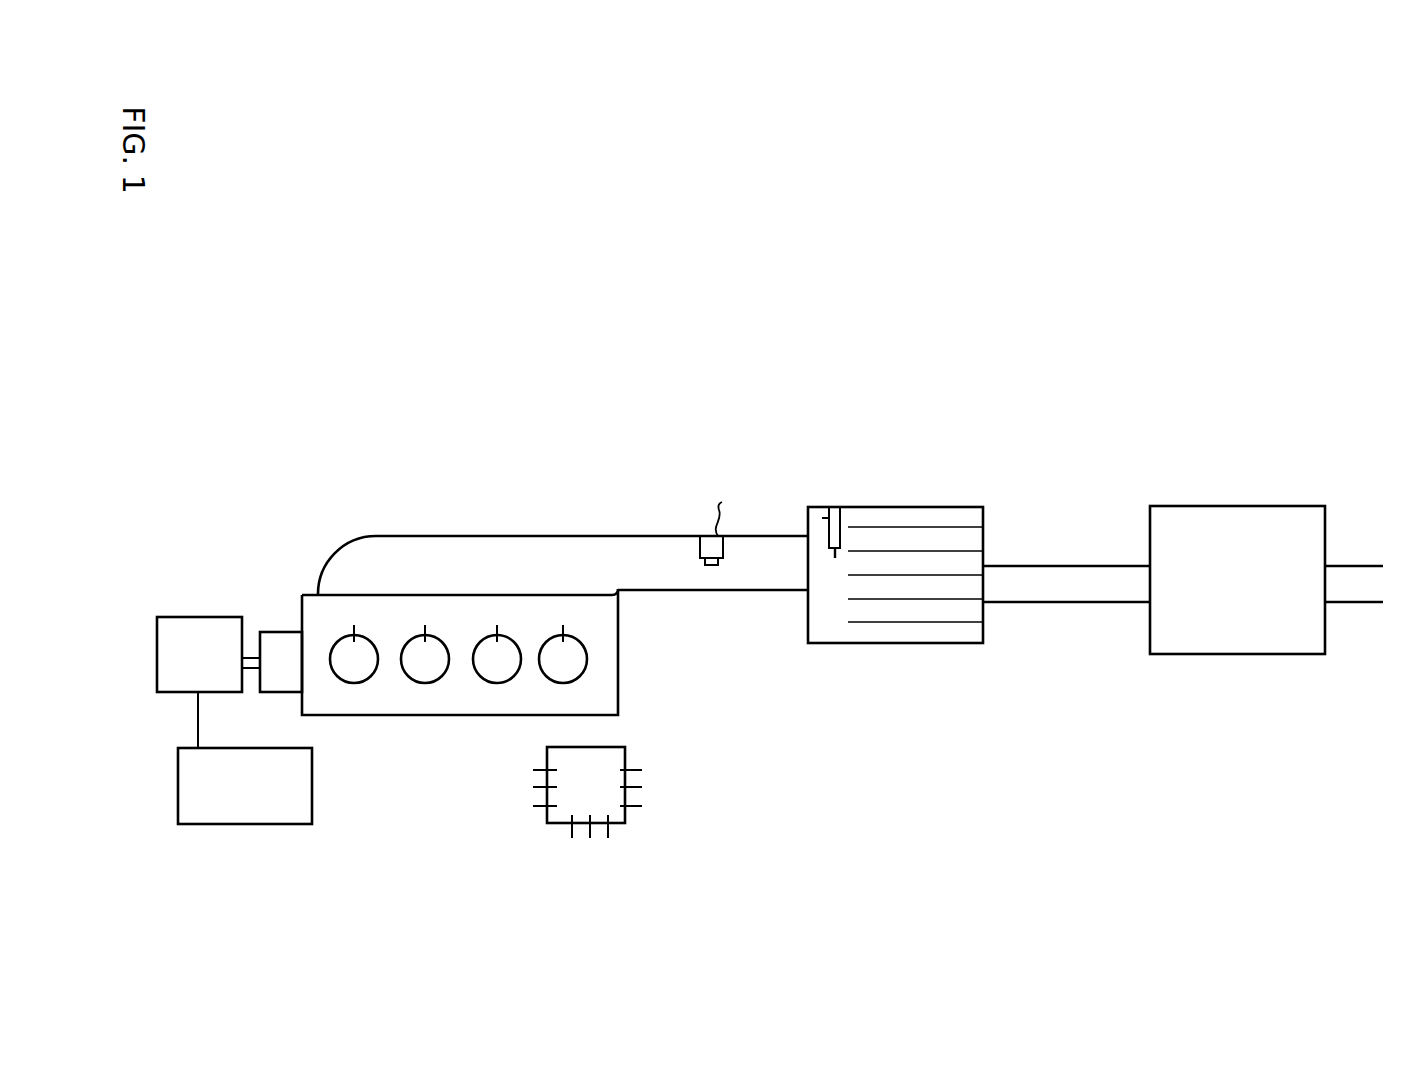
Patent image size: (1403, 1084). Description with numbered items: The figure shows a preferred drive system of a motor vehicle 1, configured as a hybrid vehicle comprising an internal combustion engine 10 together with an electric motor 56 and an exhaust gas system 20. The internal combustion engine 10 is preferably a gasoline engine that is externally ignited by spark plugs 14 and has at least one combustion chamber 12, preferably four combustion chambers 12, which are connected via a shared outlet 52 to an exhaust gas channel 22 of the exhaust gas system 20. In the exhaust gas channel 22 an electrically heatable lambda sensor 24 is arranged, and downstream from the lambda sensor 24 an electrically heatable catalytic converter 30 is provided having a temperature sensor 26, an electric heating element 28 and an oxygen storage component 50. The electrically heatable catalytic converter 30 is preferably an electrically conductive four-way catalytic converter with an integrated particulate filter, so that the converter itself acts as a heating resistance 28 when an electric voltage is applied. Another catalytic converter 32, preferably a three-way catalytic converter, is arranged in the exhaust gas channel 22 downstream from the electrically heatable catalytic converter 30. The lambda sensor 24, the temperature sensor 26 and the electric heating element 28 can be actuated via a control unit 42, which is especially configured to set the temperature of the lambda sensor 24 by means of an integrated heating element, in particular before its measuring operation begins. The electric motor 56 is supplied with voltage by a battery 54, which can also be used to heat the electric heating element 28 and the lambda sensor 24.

The motor vehicle 1 is at (1068, 423).
The internal combustion engine 10 is at (618, 700).
The combustion chamber 12 is at (418, 668).
The spark plugs 14 is at (563, 625).
The exhaust gas system 20 is at (678, 490).
The exhaust gas channel 22 is at (1060, 592).
The electrically heatable lambda sensor 24 is at (713, 576).
The temperature sensor 26 is at (835, 507).
The electric heating element 28 is at (836, 536).
The electrically heatable catalytic converter 30 is at (968, 507).
The catalytic converter 32 is at (1192, 506).
The control unit 42 is at (613, 809).
The oxygen storage component 50 is at (913, 622).
The shared outlet 52 is at (539, 548).
The battery 54 is at (242, 810).
The electric motor 56 is at (187, 628).